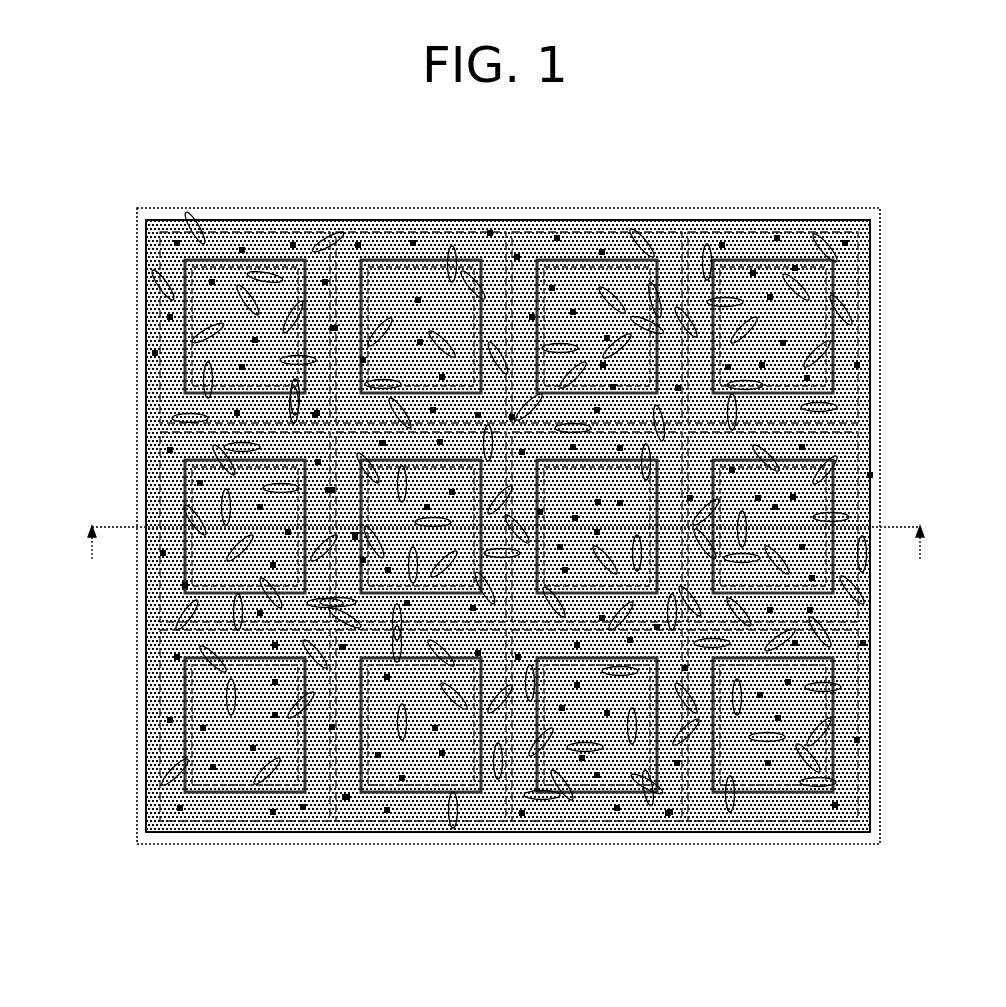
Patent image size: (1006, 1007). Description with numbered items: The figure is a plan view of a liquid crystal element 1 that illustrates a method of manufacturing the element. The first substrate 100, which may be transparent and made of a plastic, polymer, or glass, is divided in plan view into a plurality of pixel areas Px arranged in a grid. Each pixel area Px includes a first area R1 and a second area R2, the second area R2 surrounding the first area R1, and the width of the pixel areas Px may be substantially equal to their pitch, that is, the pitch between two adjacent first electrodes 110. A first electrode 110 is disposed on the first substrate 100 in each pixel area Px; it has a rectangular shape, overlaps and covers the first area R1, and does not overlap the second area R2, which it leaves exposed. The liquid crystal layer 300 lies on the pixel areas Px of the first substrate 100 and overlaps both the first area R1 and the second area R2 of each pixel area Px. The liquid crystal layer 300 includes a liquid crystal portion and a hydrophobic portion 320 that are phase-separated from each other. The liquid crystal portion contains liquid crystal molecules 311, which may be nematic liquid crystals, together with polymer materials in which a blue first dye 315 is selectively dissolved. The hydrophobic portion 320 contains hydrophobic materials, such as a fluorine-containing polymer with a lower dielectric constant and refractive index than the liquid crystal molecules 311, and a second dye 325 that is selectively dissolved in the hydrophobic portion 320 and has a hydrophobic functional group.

The liquid crystal element 1 is at (838, 159).
The first substrate 100 is at (880, 300).
The liquid crystal layer 300 is at (870, 355).
The hydrophobic portion 320 is at (847, 412).
The liquid crystal molecules 311 is at (837, 452).
The second dye 325 is at (170, 449).
The first dye 315 is at (200, 483).
The first electrode 110 is at (807, 705).
The pixel areas Px is at (240, 825).
The first area R1 is at (778, 792).
The second area R2 is at (712, 822).